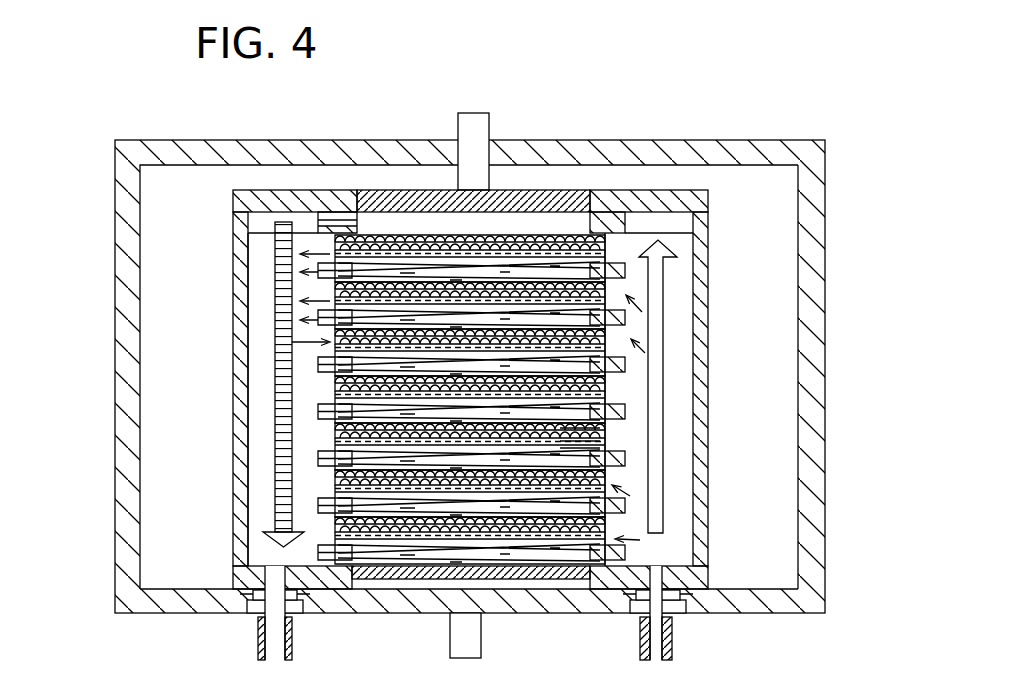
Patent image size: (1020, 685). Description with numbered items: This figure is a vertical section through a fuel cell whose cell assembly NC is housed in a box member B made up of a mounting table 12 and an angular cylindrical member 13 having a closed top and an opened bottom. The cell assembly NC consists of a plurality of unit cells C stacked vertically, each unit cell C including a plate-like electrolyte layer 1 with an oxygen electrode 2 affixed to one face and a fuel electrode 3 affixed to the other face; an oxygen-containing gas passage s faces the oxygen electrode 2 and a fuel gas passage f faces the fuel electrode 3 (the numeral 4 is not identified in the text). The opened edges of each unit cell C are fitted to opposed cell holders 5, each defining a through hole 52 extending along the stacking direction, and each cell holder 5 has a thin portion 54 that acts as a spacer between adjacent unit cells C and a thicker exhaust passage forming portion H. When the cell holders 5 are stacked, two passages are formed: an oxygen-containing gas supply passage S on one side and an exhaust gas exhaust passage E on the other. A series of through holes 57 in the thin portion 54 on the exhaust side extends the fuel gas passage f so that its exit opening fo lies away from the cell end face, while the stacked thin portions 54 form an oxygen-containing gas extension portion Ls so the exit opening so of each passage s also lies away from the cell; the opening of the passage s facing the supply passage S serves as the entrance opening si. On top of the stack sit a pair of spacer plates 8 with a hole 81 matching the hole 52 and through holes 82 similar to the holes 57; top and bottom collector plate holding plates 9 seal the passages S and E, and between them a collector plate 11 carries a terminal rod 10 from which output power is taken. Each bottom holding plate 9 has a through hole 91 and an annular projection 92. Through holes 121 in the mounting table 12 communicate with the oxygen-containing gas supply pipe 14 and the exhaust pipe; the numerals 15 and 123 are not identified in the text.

The box member B is at (455, 390).
The mounting table 12 is at (118, 602).
The angular cylindrical member 13 is at (822, 392).
The terminal rod 10 is at (490, 126).
The collector plate holding plate 9 is at (233, 198).
The spacer plate 8 is at (233, 223).
The collector plate 11 is at (430, 190).
The hole 81 is at (258, 218).
The through holes 82 is at (314, 220).
The cell holder 5 is at (708, 312).
The cell assembly NC is at (586, 179).
The exhaust gas exhaust passage E is at (275, 262).
The thin portion 54 is at (318, 455).
The through hole 52 is at (272, 380).
The unit cell C is at (560, 461).
The electrolyte layer 1 is at (607, 434).
The oxygen electrode 2 is at (607, 441).
The fuel electrode 3 is at (607, 427).
The membrane layer 4 is at (607, 448).
The through holes 57 is at (318, 318).
The oxygen-containing gas extension portion Ls is at (290, 342).
The exit opening so is at (308, 486).
The exit opening fo is at (310, 557).
The exhaust passage forming portion H is at (233, 552).
The oxygen-containing gas supply passage S is at (665, 268).
The entrance opening si is at (642, 540).
The flange 123 is at (305, 600).
The through hole 91 is at (270, 590).
The annular projection 92 is at (246, 594).
The through hole 121 is at (292, 648).
The outlet pipe 15 is at (283, 662).
The oxygen-containing gas supply pipe 14 is at (640, 650).
The oxygen-containing gas passage s is at (393, 535).
The fuel gas passage f is at (549, 505).